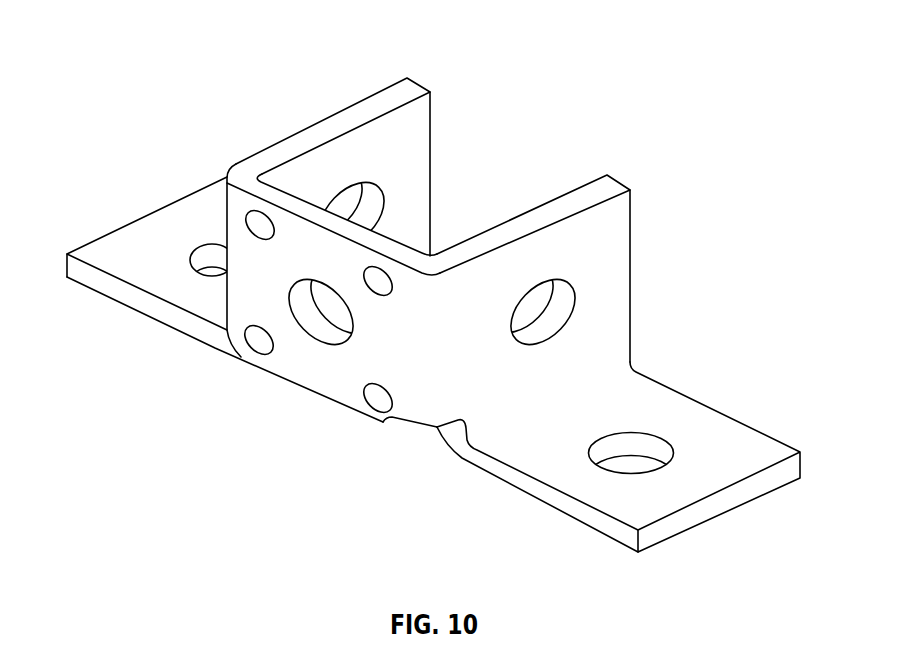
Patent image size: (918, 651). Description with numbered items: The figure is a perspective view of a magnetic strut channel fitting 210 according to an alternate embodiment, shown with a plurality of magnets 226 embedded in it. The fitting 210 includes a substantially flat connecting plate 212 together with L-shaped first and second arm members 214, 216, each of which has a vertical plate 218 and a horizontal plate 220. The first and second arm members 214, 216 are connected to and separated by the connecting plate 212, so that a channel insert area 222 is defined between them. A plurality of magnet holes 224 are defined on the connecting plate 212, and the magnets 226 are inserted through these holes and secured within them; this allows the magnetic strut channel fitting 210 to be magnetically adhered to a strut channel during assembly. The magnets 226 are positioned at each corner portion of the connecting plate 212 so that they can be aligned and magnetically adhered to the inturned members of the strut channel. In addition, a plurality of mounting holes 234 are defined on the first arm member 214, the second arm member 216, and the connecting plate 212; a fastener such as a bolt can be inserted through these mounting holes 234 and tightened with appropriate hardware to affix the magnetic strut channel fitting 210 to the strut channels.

The magnetic strut channel fitting 210 is at (316, 46).
The connecting plate 212 is at (328, 375).
The first arm member 214 is at (163, 270).
The second arm member 216 is at (547, 410).
The vertical plate 218 is at (323, 158).
The horizontal plate 220 is at (140, 237).
The channel insert area 222 is at (465, 212).
The magnet holes 224 is at (268, 353).
The magnets 226 is at (258, 224).
The mounting holes 234 is at (203, 263).